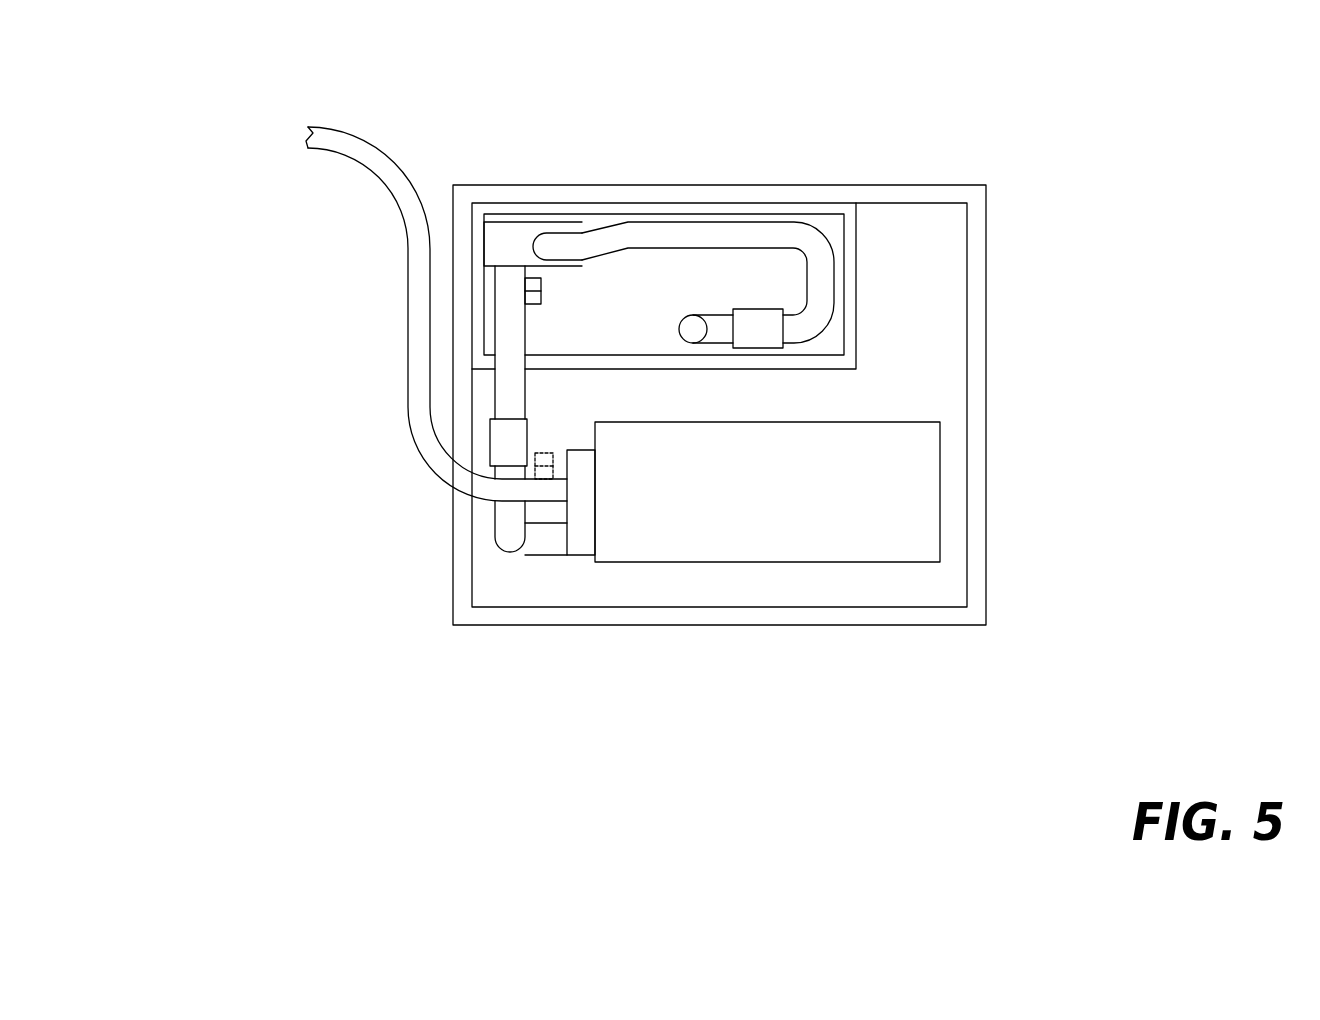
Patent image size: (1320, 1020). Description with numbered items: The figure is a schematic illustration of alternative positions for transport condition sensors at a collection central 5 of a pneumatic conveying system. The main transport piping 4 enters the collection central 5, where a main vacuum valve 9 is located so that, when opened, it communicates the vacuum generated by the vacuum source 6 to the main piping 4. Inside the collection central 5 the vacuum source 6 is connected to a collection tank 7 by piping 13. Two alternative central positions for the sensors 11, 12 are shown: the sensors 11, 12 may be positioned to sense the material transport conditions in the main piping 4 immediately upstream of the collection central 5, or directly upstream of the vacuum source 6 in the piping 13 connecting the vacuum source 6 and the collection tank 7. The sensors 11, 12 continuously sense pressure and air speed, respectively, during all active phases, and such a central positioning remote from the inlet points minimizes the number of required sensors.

The main transport piping 4 is at (278, 172).
The collection central 5 is at (993, 317).
The vacuum source 6 is at (528, 220).
The collection tank 7 is at (866, 562).
The main vacuum valve 9 is at (490, 442).
The pressure sensor 11 is at (525, 291).
The air speed sensor 12 is at (538, 466).
The piping connecting the vacuum source and collection tank 13 is at (510, 537).